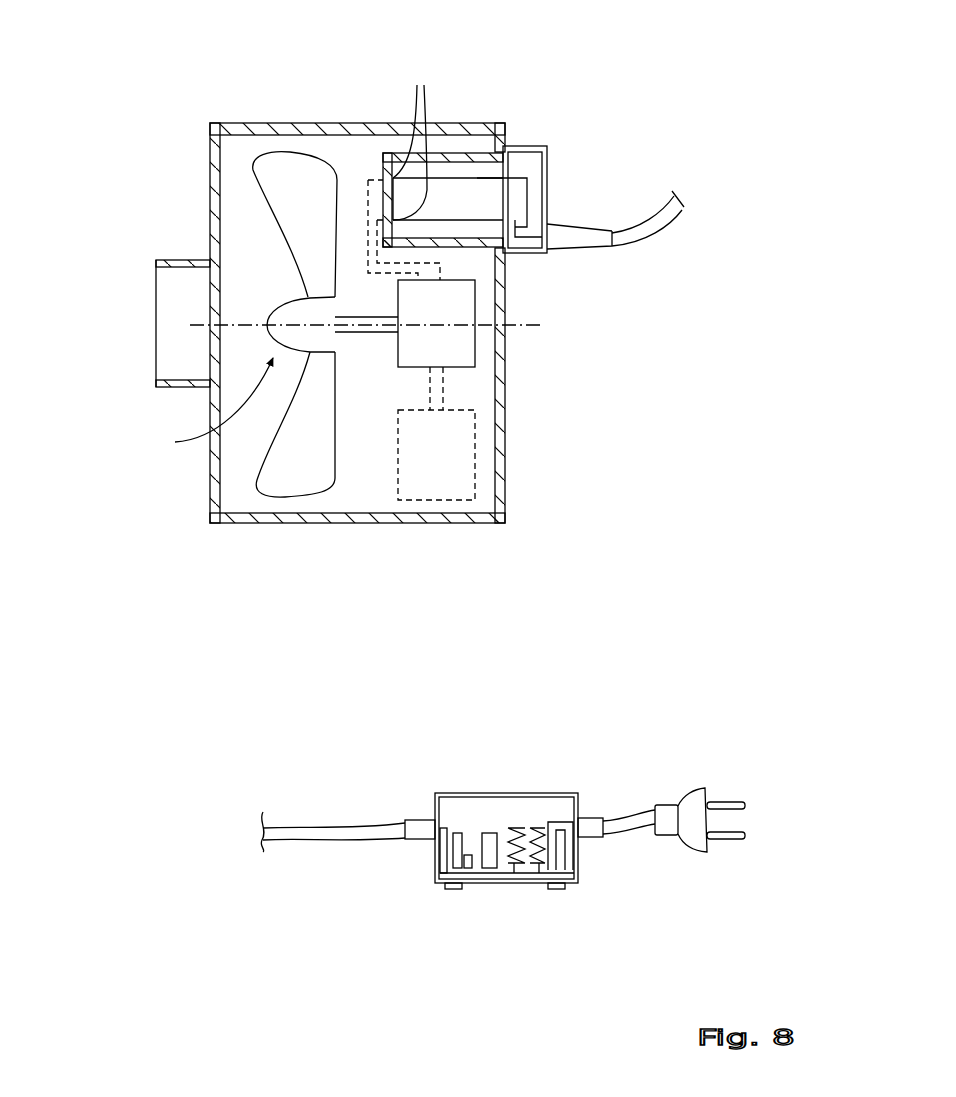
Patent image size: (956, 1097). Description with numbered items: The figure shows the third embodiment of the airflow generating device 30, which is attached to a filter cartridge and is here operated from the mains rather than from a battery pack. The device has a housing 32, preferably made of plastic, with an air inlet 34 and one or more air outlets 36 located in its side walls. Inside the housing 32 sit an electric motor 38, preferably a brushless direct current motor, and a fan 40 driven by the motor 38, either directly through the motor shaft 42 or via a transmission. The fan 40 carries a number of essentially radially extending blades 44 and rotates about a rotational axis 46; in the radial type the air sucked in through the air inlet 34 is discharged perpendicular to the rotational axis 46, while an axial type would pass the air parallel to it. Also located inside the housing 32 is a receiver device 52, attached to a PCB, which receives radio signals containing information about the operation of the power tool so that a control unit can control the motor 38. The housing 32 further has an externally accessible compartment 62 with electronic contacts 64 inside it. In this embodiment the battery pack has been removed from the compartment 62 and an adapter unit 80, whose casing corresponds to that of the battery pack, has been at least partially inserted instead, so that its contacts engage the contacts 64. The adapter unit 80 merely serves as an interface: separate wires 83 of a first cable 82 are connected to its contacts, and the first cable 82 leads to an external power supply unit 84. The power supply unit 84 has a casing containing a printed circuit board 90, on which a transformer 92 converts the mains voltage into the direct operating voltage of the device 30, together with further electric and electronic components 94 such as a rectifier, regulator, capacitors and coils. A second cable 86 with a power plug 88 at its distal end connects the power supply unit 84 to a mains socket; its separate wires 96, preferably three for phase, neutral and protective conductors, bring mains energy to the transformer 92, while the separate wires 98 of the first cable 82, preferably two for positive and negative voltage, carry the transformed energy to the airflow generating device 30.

The airflow generating device 30 is at (592, 64).
The housing 32 is at (355, 128).
The air inlet 34 is at (166, 348).
The air outlets 36 is at (295, 124).
The electric motor 38 is at (447, 300).
The fan 40 is at (205, 405).
The motor shaft 42 is at (363, 333).
The blades 44 is at (280, 173).
The rotational axis 46 is at (460, 327).
The receiver device 52 is at (458, 487).
The compartment 62 is at (488, 158).
The electronic contacts 64 is at (404, 170).
The adapter unit 80 is at (532, 185).
The first cable 82 is at (658, 223).
The wires 83 is at (477, 182).
The external power supply unit 84 is at (495, 812).
The second cable 86 is at (637, 818).
The power plug 88 is at (692, 803).
The printed circuit board 90 is at (503, 872).
The transformer 92 is at (527, 864).
The electric and/or electronic components 94 is at (471, 834).
The wires 96 is at (558, 847).
The wires 98 is at (436, 853).